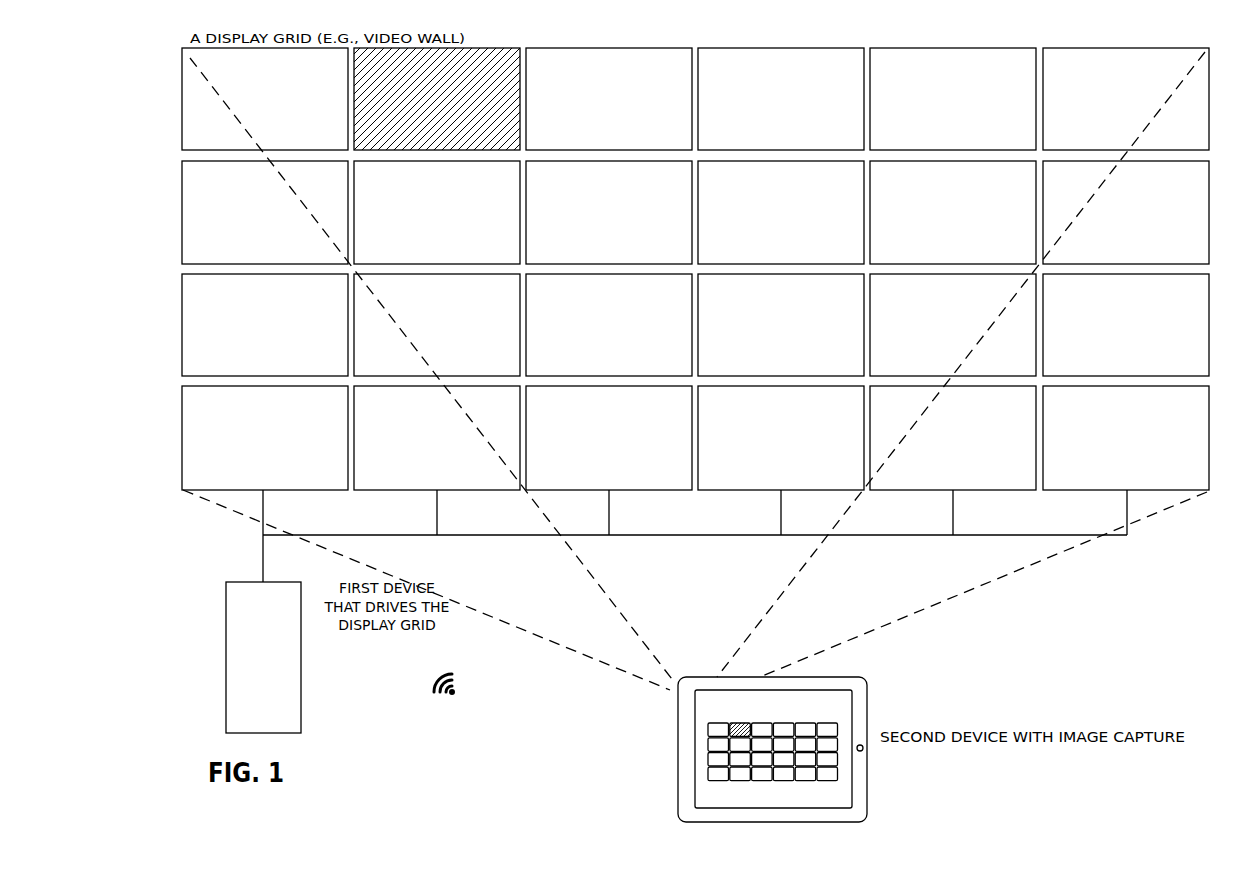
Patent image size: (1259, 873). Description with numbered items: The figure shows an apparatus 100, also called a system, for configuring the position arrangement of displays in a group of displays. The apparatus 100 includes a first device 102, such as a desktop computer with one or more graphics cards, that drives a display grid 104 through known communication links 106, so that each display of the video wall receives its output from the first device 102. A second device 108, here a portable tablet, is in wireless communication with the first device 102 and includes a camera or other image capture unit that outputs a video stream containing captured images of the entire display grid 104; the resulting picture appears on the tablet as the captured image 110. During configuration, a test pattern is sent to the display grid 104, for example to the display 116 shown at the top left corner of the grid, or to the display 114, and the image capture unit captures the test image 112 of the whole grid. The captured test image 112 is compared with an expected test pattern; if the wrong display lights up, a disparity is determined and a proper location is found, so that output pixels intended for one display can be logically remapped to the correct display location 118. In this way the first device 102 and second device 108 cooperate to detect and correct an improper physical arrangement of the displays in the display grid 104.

The apparatus 100 is at (695, 258).
The first device 102 is at (301, 677).
The display grid 104 is at (1218, 118).
The communication links 106 is at (263, 552).
The second device 108 is at (838, 677).
The captured image 110 is at (750, 720).
The captured test image 112 is at (1218, 493).
The display 114 is at (483, 41).
The display 116 is at (244, 150).
The display location 118 is at (353, 433).